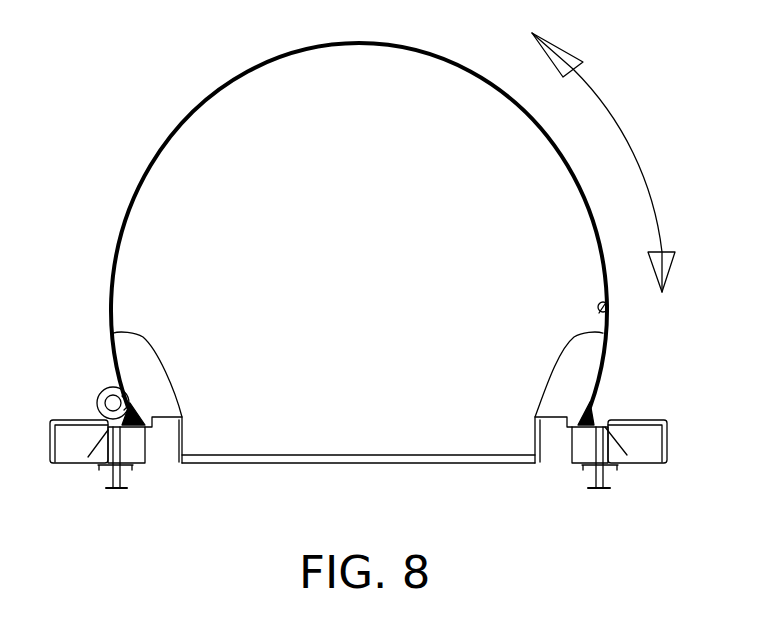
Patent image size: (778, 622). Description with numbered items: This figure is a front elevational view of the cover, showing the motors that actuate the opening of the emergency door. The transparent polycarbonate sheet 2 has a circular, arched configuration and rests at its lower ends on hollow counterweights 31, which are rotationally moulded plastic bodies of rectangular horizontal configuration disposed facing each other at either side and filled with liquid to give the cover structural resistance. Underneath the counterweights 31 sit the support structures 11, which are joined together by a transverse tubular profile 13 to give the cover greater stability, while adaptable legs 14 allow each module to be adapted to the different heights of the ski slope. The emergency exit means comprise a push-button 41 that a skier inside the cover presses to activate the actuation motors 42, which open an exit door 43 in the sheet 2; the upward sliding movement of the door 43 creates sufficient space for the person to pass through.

The transparent polycarbonate sheet 2 is at (167, 135).
The support structure 11 is at (130, 447).
The transverse tubular profile 13 is at (313, 457).
The adaptable leg 14 is at (116, 482).
The hollow counterweight 31 is at (68, 438).
The push-button 41 is at (613, 310).
The actuation motor 42 is at (102, 392).
The exit door 43 is at (578, 165).